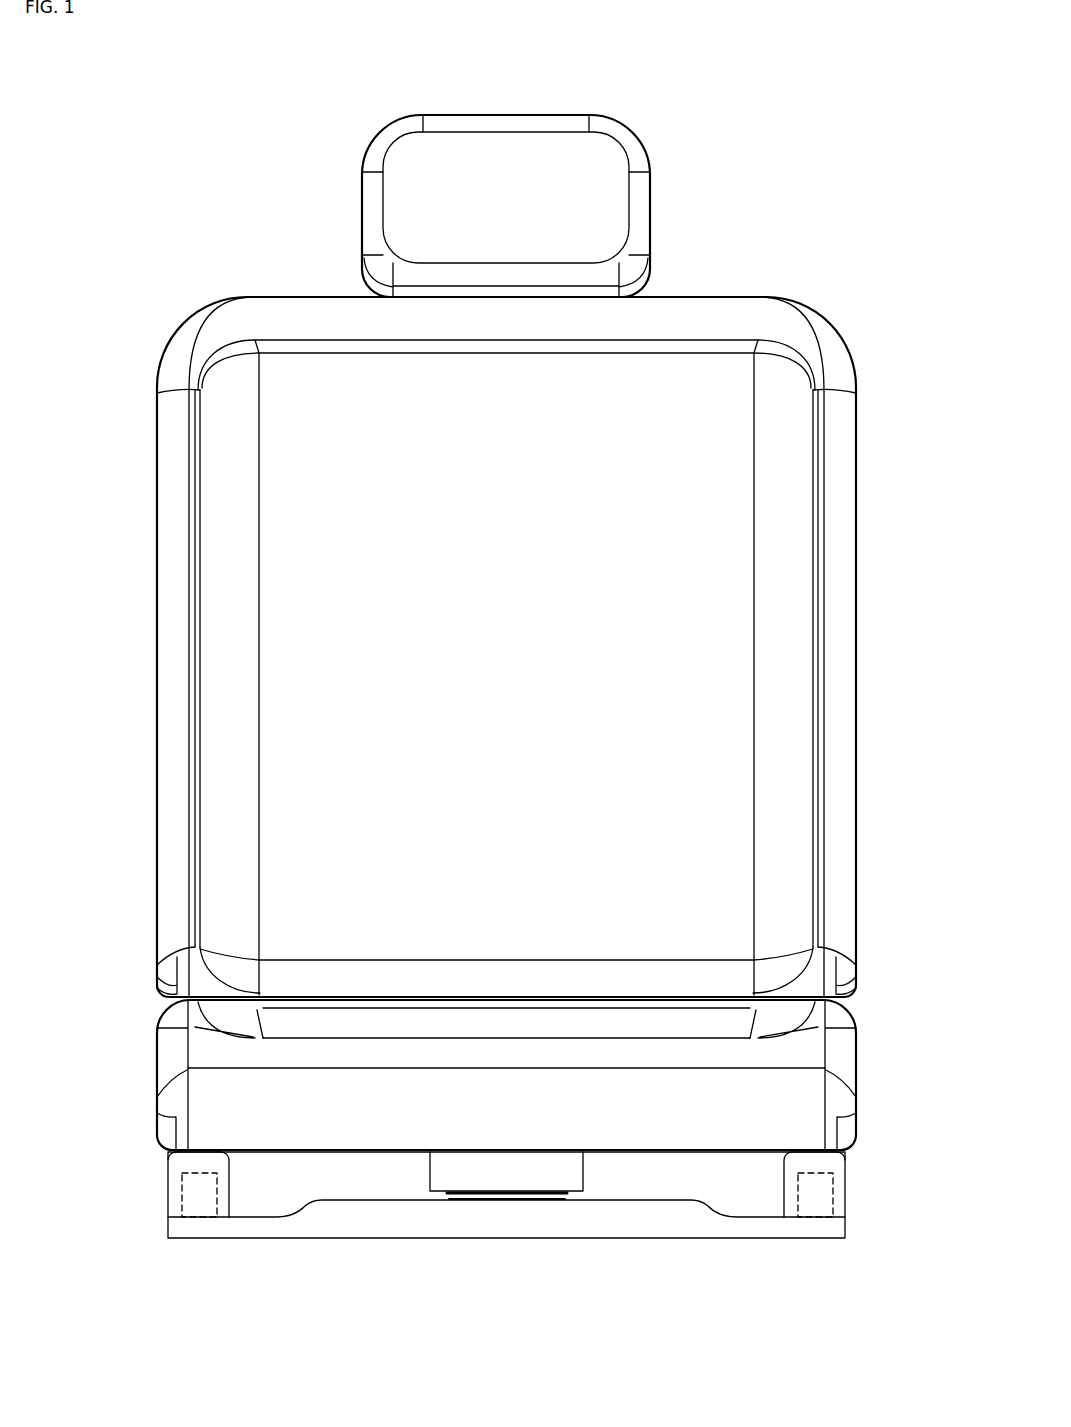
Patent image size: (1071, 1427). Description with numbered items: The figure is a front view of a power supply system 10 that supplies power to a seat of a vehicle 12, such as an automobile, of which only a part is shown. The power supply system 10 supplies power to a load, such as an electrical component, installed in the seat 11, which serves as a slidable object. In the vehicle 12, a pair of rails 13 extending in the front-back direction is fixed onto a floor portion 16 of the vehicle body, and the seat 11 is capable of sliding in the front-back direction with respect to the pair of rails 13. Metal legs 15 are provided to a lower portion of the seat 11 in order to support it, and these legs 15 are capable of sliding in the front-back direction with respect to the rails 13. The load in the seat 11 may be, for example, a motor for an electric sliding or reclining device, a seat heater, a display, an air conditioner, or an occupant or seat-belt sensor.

The power supply system 10 is at (509, 721).
The seat 11 is at (868, 540).
The vehicle 12 is at (843, 167).
The rails 13 is at (182, 1192).
The metal legs 15 is at (168, 1163).
The floor portion 16 is at (497, 1240).